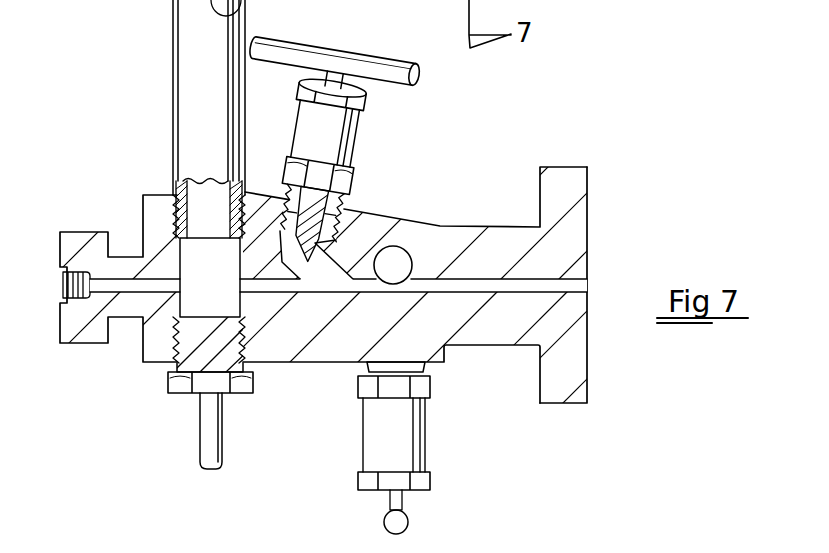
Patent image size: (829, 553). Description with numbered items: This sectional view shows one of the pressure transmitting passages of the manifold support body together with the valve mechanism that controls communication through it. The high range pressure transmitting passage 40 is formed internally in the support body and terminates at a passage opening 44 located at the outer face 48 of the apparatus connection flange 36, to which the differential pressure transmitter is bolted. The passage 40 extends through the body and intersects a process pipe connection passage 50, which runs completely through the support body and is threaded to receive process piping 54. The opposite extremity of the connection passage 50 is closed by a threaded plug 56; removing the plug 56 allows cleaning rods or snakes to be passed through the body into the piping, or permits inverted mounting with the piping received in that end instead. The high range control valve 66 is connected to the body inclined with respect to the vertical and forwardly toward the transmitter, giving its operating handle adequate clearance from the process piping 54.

The apparatus connection flange 36 is at (564, 167).
The high range pressure transmitting passage 40 is at (448, 283).
The passage opening 44 is at (587, 283).
The outer face 48 is at (588, 212).
The process pipe connection passage 50 is at (177, 212).
The process piping 54 is at (195, 96).
The plug 56 is at (193, 393).
The high range control valve 66 is at (351, 156).